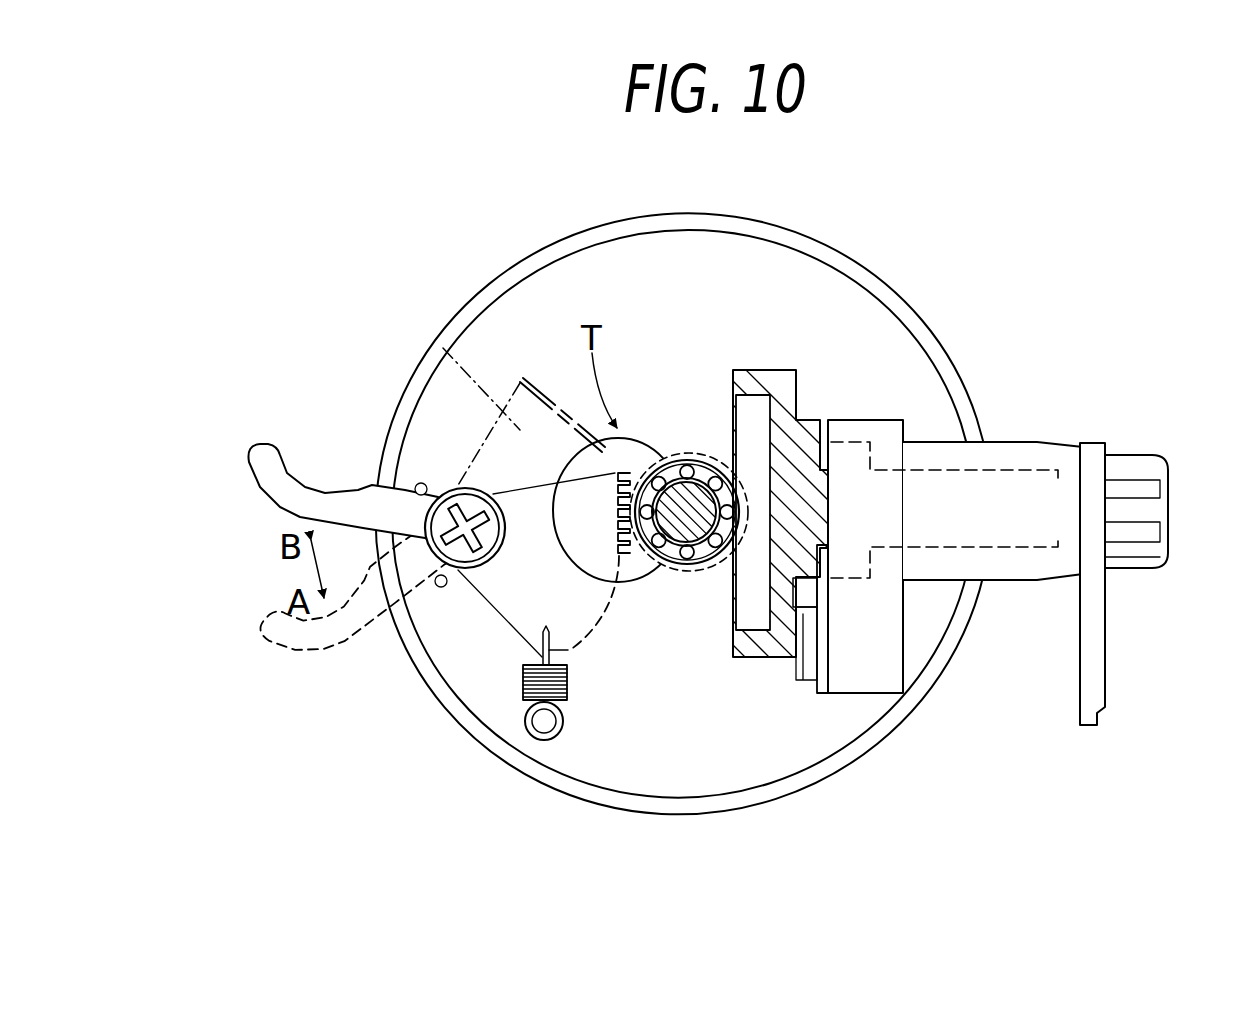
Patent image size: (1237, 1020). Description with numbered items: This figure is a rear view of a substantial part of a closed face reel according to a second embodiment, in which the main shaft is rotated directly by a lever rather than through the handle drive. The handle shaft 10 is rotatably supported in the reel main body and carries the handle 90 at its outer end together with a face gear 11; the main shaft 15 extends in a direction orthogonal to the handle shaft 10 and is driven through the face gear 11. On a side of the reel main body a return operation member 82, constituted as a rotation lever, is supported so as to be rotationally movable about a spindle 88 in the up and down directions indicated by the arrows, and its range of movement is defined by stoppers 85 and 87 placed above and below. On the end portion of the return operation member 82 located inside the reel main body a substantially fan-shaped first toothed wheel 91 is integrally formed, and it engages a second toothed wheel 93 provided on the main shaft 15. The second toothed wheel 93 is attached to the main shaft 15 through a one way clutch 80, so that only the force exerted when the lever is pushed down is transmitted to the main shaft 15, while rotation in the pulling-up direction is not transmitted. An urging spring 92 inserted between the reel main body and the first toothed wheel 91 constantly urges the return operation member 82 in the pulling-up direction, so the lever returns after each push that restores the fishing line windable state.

The handle shaft 10 is at (998, 465).
The face gear 11 is at (771, 370).
The main shaft 15 is at (670, 450).
The one way clutch 80 is at (694, 576).
The return operation member 82 is at (333, 505).
The stopper 85 is at (416, 486).
The stopper 87 is at (440, 587).
The spindle 88 is at (458, 482).
The handle 90 is at (1092, 645).
The first toothed wheel 91 is at (443, 348).
The urging spring 92 is at (567, 682).
The second toothed wheel 93 is at (700, 453).